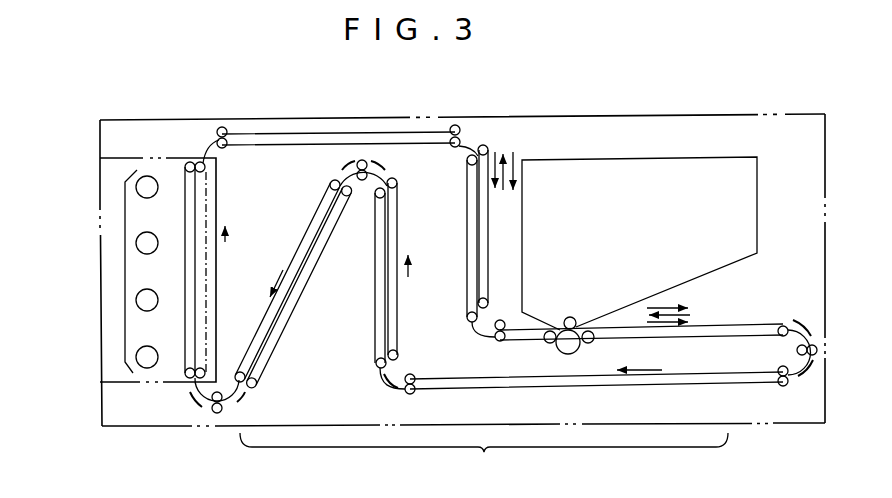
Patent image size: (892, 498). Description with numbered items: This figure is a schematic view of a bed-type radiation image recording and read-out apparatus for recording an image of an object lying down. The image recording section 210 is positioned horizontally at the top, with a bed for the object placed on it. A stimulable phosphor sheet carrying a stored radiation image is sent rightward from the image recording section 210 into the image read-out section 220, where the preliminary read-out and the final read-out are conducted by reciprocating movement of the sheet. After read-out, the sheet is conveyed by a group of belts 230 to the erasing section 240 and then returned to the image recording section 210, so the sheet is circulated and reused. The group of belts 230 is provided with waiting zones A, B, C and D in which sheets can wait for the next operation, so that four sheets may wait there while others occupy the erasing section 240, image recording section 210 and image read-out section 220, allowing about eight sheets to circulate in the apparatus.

The image recording section 210 is at (359, 130).
The image read-out section 220 is at (585, 312).
The group of belts 230 is at (484, 456).
The erasing section 240 is at (117, 213).
The waiting zone A is at (301, 311).
The waiting zone B is at (404, 237).
The waiting zone C is at (519, 398).
The waiting zone D is at (685, 394).